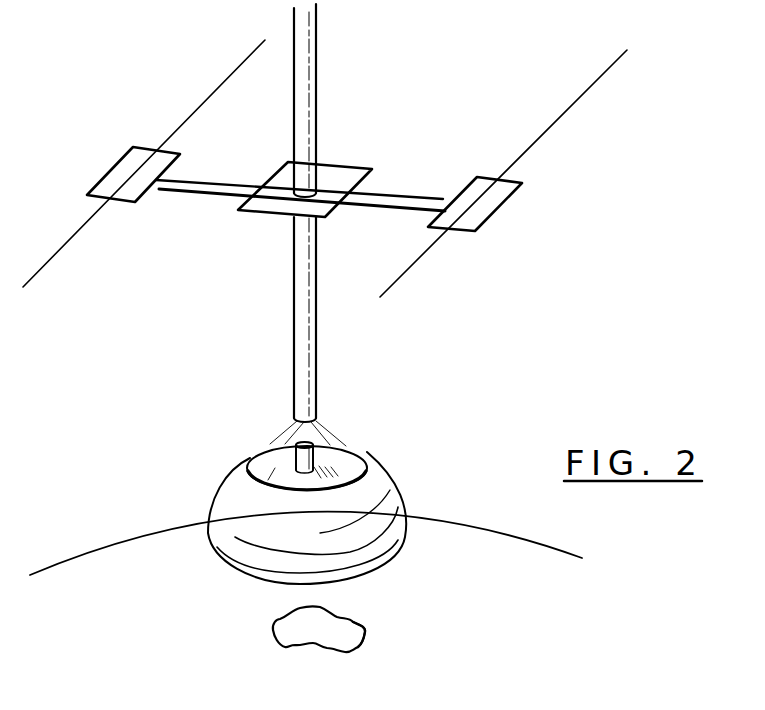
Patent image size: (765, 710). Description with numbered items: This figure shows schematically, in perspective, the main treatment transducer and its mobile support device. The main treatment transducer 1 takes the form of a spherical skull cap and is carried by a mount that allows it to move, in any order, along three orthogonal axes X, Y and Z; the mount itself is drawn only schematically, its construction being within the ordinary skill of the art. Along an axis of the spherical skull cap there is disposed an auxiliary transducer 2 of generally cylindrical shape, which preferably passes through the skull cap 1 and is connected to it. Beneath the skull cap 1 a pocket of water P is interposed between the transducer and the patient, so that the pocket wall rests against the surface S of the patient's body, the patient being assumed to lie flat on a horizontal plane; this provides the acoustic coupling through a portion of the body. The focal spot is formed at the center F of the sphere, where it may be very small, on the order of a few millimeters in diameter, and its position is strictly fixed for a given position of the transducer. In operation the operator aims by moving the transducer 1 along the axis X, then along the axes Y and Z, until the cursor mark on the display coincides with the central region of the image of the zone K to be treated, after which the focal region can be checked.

The main treatment transducer 1 is at (345, 470).
The auxiliary transducer 2 is at (300, 458).
The pocket of water P is at (228, 502).
The surface of the body of the patient S is at (306, 548).
The center of the sphere F is at (299, 624).
The treatment zone K is at (365, 632).
The X axis X is at (304, 189).
The Y axis Y is at (325, 168).
The Z axis Z is at (327, 213).